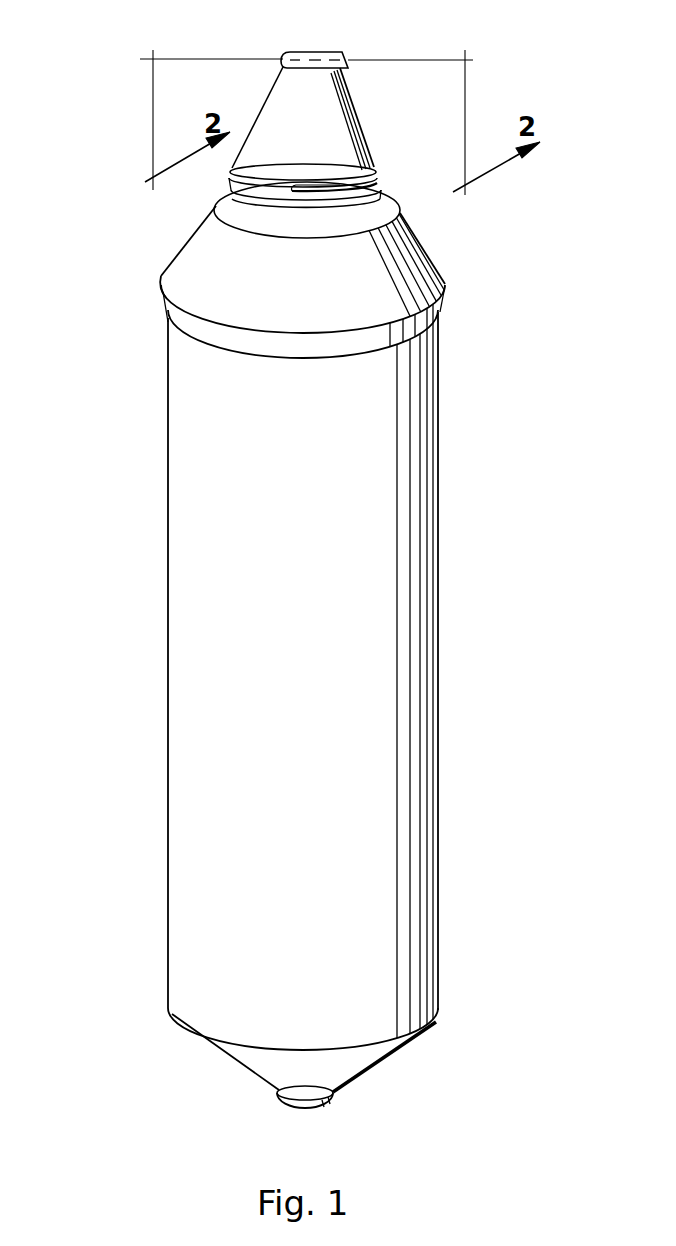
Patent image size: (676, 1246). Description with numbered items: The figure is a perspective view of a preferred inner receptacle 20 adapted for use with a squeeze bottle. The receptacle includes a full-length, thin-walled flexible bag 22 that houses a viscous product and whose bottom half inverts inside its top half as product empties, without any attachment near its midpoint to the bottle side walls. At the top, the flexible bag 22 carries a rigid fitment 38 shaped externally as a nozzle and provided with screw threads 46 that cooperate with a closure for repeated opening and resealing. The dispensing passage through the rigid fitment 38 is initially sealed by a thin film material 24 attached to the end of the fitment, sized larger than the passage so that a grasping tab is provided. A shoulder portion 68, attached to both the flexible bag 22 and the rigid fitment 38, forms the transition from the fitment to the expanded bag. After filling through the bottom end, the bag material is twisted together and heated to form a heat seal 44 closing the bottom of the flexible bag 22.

The inner receptacle 20 is at (140, 552).
The flexible bag 22 is at (398, 680).
The thin film material 24 is at (313, 52).
The rigid fitment 38 is at (353, 125).
The heat seal 44 is at (333, 1095).
The screw threads 46 is at (380, 195).
The shoulder portion 68 is at (383, 271).